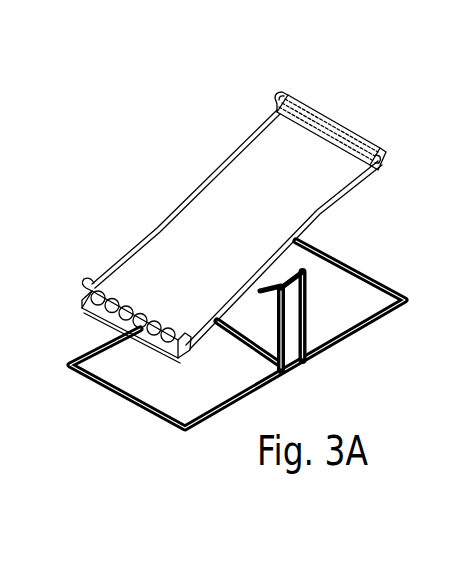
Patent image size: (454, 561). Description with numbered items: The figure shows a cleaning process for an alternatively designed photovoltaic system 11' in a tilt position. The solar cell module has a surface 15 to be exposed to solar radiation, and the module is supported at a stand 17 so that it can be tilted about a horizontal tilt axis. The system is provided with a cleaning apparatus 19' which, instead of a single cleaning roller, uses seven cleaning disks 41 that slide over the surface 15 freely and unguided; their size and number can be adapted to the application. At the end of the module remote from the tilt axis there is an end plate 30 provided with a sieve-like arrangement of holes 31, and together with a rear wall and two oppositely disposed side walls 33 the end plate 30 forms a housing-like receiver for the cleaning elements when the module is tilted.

The photovoltaic system 11' is at (237, 216).
The surface 15 is at (252, 192).
The stand 17 is at (306, 316).
The cleaning apparatus 19' is at (124, 283).
The end plate 30 is at (336, 133).
The holes 31 is at (318, 112).
The side wall 33 is at (381, 168).
The cleaning disk 41 is at (125, 320).